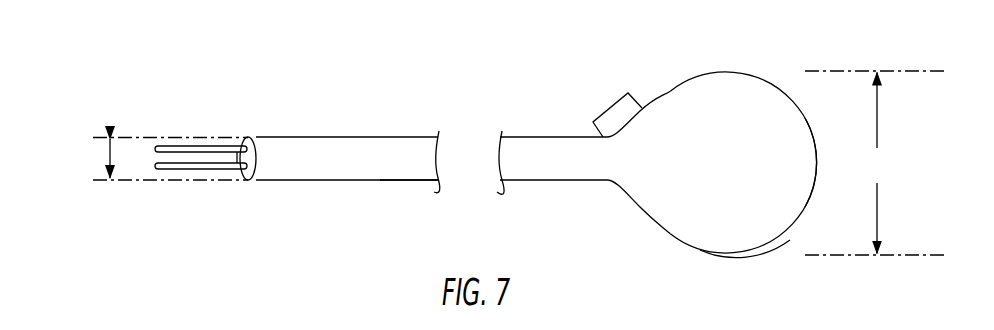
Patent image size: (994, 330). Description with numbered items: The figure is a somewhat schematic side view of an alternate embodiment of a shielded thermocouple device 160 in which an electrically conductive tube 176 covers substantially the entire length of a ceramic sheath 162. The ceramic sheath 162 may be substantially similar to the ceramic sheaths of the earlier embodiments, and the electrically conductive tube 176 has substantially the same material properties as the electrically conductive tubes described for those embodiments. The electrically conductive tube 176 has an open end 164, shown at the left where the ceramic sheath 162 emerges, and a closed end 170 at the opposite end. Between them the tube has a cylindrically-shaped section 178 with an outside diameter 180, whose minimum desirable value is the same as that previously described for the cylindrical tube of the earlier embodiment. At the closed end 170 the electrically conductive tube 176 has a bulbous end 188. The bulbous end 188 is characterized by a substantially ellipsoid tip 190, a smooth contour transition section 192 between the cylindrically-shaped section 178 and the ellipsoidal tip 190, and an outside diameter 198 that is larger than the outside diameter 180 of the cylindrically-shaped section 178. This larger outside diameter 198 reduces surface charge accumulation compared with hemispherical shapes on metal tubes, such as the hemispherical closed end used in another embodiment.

The shielded thermocouple device 160 is at (387, 127).
The ceramic sheath 162 is at (226, 133).
The open end 164 is at (240, 180).
The closed end 170 is at (816, 163).
The electrically conductive tube 176 is at (525, 137).
The cylindrically-shaped section 178 is at (407, 185).
The outside diameter 180 is at (107, 158).
The bulbous end 188 is at (643, 253).
The ellipsoidal tip 190 is at (752, 253).
The smooth contour transition section 192 is at (611, 106).
The outside diameter 198 is at (875, 163).